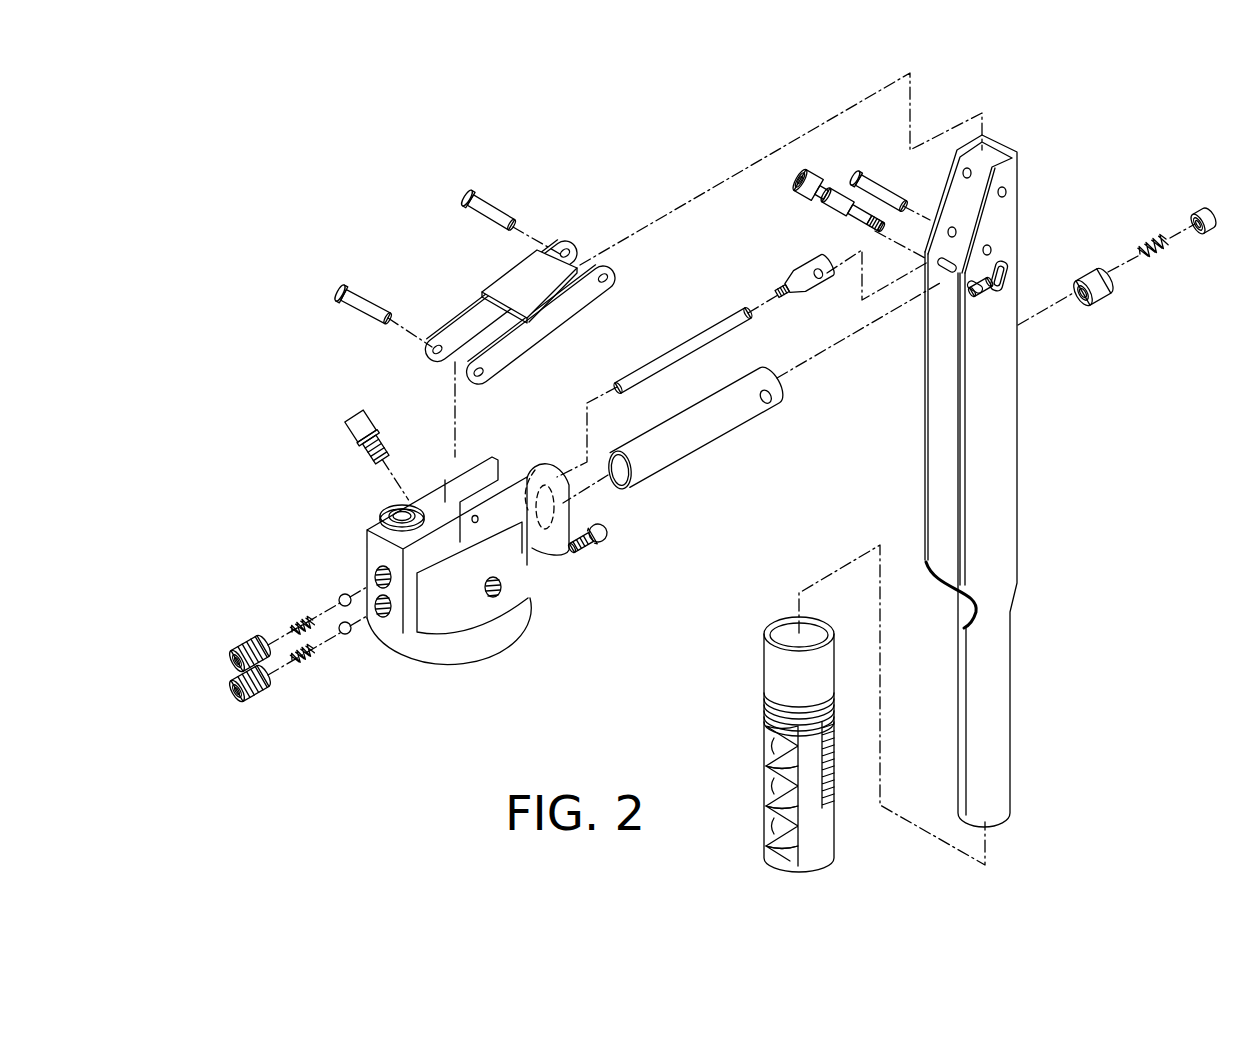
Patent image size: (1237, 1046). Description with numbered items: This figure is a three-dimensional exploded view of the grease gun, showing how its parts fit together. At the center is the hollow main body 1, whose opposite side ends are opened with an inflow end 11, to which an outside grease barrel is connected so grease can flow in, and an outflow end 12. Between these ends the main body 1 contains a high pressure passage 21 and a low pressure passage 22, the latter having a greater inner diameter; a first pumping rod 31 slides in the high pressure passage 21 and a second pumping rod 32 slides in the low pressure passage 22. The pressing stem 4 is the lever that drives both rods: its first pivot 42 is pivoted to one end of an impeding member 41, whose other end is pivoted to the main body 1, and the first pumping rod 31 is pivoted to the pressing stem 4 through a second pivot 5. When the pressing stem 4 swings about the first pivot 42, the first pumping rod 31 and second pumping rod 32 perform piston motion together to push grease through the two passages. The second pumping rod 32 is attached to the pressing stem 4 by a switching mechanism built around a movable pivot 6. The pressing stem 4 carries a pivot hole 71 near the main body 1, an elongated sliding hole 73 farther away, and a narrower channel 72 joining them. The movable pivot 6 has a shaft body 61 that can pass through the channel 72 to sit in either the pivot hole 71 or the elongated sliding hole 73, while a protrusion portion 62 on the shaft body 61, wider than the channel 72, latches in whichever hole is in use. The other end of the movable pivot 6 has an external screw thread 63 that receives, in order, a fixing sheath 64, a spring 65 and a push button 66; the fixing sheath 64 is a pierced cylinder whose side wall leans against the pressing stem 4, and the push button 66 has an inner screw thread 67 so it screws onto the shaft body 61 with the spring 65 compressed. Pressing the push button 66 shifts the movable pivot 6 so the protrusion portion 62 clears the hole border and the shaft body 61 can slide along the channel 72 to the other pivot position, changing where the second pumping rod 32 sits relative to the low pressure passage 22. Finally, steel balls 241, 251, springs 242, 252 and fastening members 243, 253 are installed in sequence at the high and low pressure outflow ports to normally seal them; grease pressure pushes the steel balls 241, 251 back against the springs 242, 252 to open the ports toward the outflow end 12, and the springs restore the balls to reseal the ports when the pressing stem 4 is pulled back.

The main body 1 is at (312, 448).
The pressing stem 4 is at (1018, 435).
The second pivot 5 is at (880, 188).
The movable pivot 6 is at (770, 233).
The inflow end 11 is at (452, 660).
The outflow end 12 is at (383, 515).
The high pressure passage 21 is at (553, 468).
The low pressure passage 22 is at (568, 518).
The first pumping rod 31 is at (630, 375).
The second pumping rod 32 is at (740, 418).
The impeding member 41 is at (510, 282).
The first pivot 42 is at (490, 213).
The shaft body 61 is at (835, 220).
The protrusion portion 62 is at (835, 183).
The external screw thread 63 is at (868, 231).
The fixing sheath 64 is at (1088, 270).
The spring 65 is at (1150, 240).
The push button 66 is at (1205, 207).
The inner screw thread 67 is at (1200, 233).
The pivot hole 71 is at (975, 290).
The channel 72 is at (1008, 260).
The elongated sliding hole 73 is at (1008, 283).
The steel ball 241 is at (345, 592).
The spring 242 is at (300, 618).
The fastening member 243 is at (255, 645).
The steel ball 251 is at (348, 640).
The spring 252 is at (300, 670).
The fastening member 253 is at (262, 700).